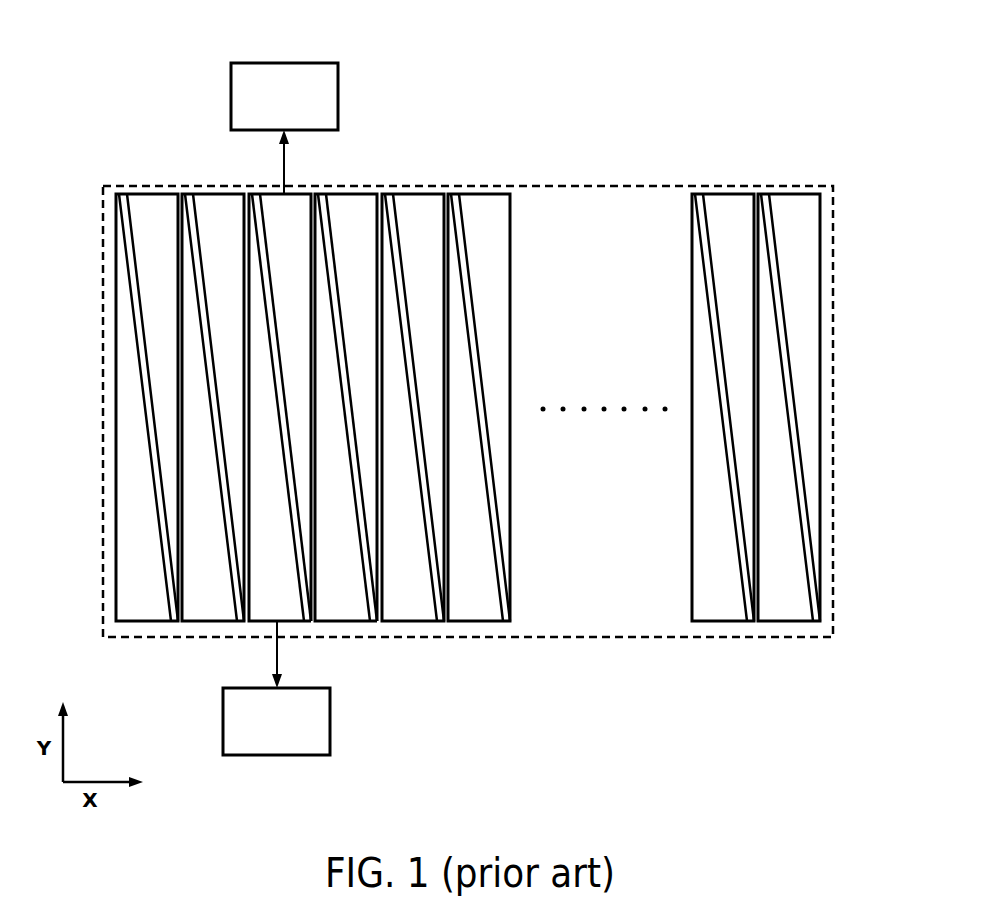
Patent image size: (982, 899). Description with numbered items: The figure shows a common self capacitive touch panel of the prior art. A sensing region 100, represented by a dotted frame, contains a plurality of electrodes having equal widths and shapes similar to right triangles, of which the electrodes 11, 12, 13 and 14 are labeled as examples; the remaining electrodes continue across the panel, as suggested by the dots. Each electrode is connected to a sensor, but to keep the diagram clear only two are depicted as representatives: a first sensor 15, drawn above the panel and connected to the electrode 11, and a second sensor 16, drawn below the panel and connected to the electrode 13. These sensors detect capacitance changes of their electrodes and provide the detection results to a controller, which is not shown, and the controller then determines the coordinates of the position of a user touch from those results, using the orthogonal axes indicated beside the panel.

The sensing region 100 is at (833, 186).
The electrode 11 is at (268, 196).
The electrode 12 is at (369, 196).
The electrode 13 is at (257, 615).
The electrode 14 is at (350, 618).
The first sensor 15 is at (296, 63).
The sensor 16 is at (308, 756).